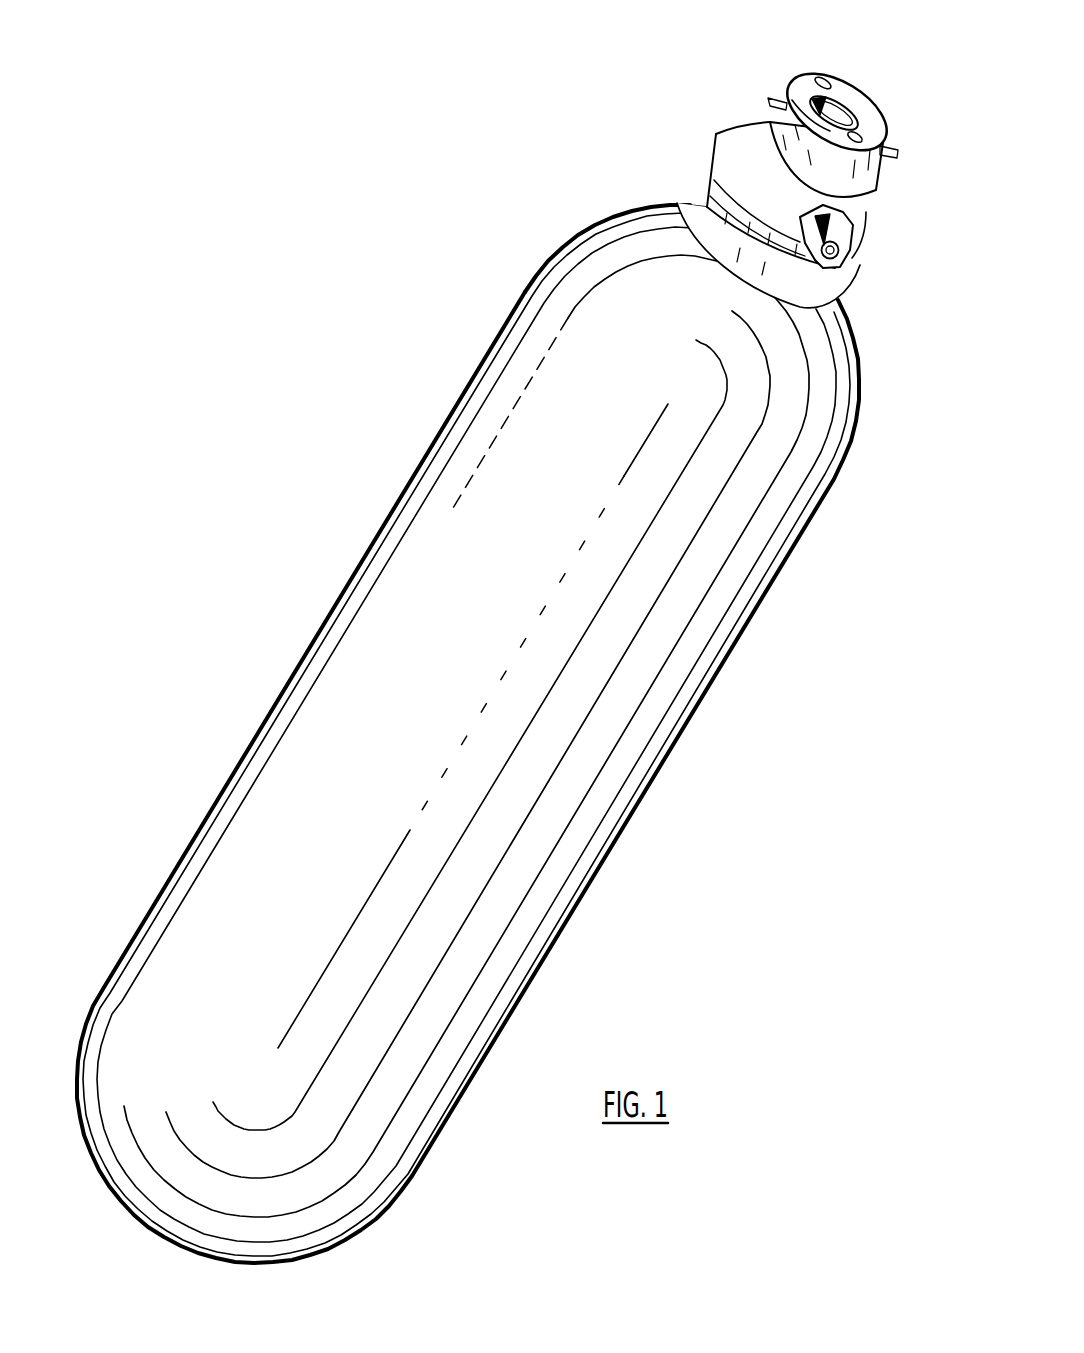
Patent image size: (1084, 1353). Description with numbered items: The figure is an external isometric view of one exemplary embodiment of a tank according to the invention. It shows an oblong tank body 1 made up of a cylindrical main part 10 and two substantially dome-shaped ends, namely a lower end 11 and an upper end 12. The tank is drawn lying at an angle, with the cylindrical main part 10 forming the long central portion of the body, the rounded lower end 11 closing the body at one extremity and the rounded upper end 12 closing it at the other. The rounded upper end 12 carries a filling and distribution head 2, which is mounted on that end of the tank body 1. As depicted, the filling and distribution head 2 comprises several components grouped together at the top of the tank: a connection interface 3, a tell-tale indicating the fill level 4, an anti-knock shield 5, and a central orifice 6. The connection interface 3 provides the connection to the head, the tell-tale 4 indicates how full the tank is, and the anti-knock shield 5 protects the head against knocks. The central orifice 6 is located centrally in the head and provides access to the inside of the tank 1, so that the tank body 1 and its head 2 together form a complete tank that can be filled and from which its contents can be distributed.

The tank body 1 is at (638, 822).
The filling and distribution head 2 is at (730, 109).
The connection interface 3 is at (879, 188).
The tell-tale indicating the fill level 4 is at (847, 268).
The anti-knock shield 5 is at (818, 80).
The central orifice 6 is at (841, 116).
The cylindrical main part 10 is at (430, 655).
The lower end 11 is at (293, 1177).
The upper end 12 is at (782, 408).